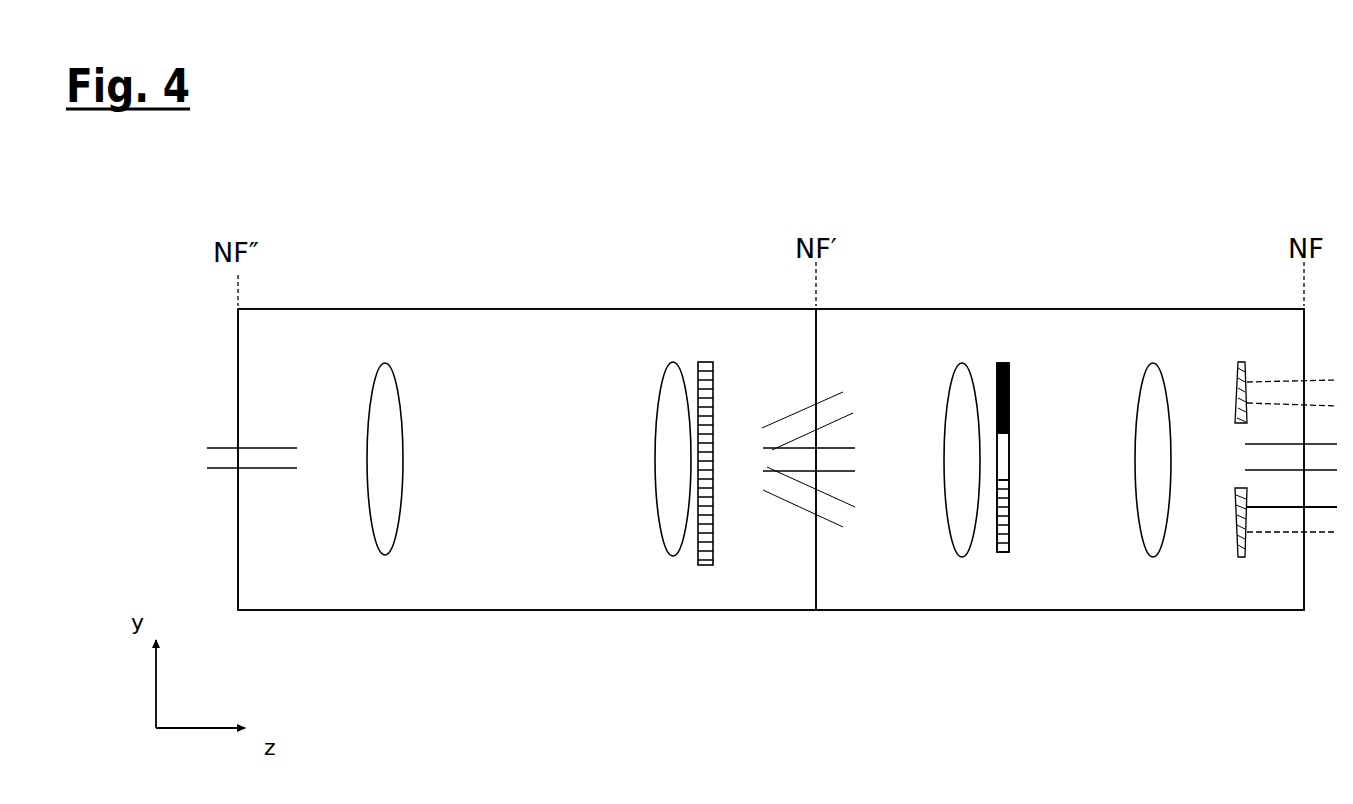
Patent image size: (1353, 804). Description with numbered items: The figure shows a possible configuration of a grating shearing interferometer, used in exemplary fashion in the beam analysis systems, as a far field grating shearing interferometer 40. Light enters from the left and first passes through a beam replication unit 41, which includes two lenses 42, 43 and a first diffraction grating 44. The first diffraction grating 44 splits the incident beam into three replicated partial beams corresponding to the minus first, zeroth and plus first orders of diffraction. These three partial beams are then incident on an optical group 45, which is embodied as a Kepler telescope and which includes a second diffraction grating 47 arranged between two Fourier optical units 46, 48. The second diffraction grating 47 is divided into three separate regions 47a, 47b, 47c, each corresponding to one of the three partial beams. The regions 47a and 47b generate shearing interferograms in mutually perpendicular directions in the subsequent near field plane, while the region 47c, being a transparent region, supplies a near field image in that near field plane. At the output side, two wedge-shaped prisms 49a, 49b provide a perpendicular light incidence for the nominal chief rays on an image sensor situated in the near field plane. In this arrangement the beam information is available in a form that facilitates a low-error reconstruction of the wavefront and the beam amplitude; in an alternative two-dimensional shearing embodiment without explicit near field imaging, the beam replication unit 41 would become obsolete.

The far field grating shearing interferometer 40 is at (826, 165).
The beam replication unit 41 is at (515, 579).
The lens 42 is at (380, 408).
The lens 43 is at (666, 406).
The first diffraction grating 44 is at (706, 340).
The optical group 45 is at (907, 597).
The Fourier optical unit 46 is at (958, 410).
The second diffraction grating 47 is at (994, 320).
The region 47a is at (1011, 385).
The region 47b is at (1011, 503).
The transparent region 47c is at (1011, 445).
The Fourier optical unit 48 is at (1150, 410).
The wedge-shaped prism 49a is at (1231, 340).
The wedge-shaped prism 49b is at (1247, 572).